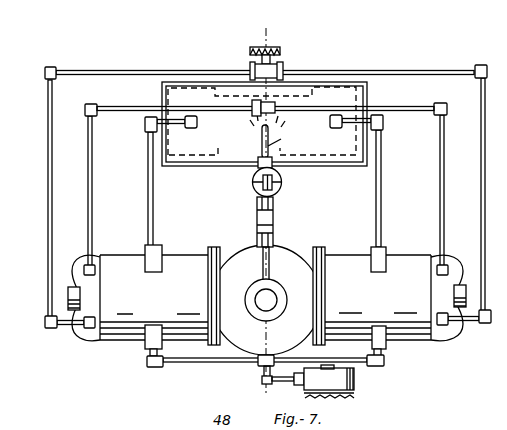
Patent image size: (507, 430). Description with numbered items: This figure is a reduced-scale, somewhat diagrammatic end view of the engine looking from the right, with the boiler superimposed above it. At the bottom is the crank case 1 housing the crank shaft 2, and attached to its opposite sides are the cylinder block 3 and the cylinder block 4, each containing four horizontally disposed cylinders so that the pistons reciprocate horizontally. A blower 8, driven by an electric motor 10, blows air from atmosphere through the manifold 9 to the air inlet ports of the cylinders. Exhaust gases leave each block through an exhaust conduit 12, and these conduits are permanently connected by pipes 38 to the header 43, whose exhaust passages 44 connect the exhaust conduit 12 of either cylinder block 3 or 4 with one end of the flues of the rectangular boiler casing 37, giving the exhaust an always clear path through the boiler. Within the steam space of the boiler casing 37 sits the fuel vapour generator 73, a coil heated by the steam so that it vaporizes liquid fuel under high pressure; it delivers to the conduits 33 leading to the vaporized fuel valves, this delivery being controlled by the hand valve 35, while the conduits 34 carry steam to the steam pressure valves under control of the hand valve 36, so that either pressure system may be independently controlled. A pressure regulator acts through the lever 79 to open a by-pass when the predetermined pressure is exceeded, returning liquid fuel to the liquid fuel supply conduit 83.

The crank case 1 is at (287, 251).
The crank shaft 2 is at (266, 300).
The cylinder block 3 is at (398, 256).
The cylinder block 4 is at (113, 265).
The blower 8 is at (355, 378).
The manifold 9 is at (170, 358).
The electric motor 10 is at (355, 397).
The exhaust conduit 12 is at (162, 252).
The conduit 33 is at (90, 207).
The conduit 34 is at (47, 262).
The hand valve 35 is at (256, 101).
The hand valve 36 is at (276, 48).
The boiler casing 37 is at (367, 85).
The pipe 38 is at (150, 210).
The header 43 is at (162, 101).
The exhaust passage 44 is at (233, 145).
The fuel vapour generator 73 is at (272, 143).
The lever 79 is at (273, 172).
The liquid fuel supply conduit 83 is at (257, 234).